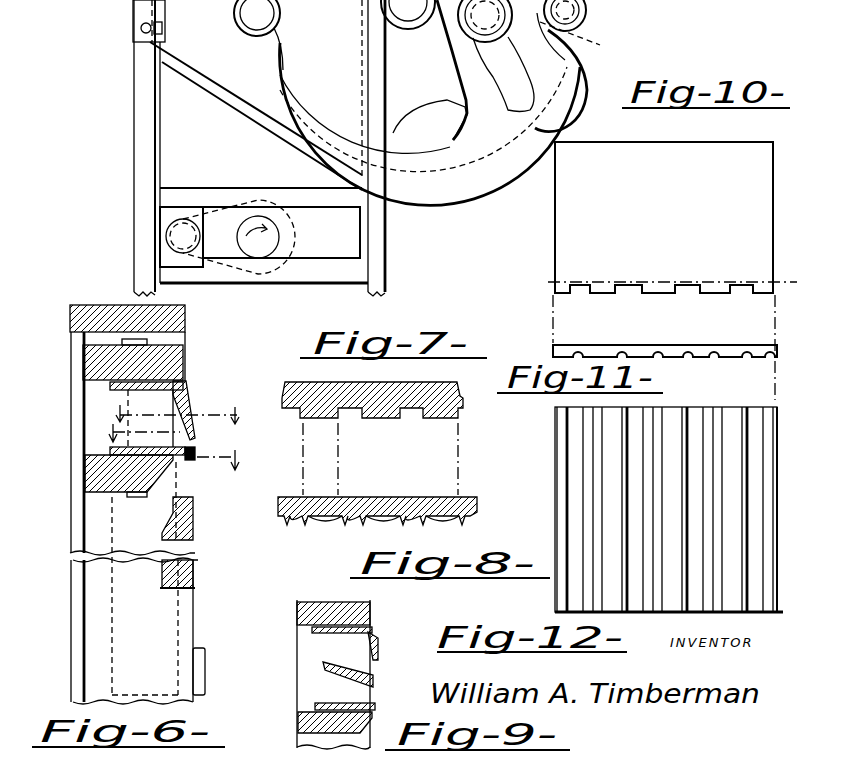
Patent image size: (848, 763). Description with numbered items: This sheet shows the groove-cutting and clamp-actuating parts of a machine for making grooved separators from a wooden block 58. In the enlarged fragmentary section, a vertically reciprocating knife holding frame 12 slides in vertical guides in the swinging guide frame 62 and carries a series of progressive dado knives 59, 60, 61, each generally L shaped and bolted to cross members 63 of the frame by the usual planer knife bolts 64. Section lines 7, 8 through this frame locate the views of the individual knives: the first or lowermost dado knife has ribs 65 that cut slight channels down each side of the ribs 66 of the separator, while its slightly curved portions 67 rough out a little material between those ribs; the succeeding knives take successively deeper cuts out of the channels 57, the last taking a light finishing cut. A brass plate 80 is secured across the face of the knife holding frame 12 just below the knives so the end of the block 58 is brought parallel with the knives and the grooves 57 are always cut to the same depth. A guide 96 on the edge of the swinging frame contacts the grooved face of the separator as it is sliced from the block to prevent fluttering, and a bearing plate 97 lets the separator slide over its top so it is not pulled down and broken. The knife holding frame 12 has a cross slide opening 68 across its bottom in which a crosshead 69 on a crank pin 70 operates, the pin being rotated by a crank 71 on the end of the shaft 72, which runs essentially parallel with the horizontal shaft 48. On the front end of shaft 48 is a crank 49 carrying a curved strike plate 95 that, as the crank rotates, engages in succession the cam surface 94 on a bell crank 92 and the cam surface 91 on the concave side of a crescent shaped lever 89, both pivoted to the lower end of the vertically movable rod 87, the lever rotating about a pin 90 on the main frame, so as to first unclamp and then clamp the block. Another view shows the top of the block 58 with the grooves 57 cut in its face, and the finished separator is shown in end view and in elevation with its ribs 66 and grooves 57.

In FIG. 10, the knife holding frame 12 is at (163, 186).
In FIG. 6, the knife holding frame 12 is at (102, 605).
In FIG. 9, the knife holding frame 12 is at (297, 741).
In FIG. 10, the horizontal shaft 48 is at (388, 3).
In FIG. 10, the crank 49 is at (436, 32).
In FIG. 11, the grooves 57 is at (757, 283).
In FIG. 12, the grooves 57 is at (640, 498).
In FIG. 11, the block 58 is at (672, 271).
In FIG. 6, the dado knife 59 is at (193, 462).
In FIG. 8, the dado knife 59 is at (280, 507).
In FIG. 9, the dado knife 59 is at (298, 702).
In FIG. 9, the dado knife 60 is at (298, 667).
In FIG. 6, the dado knife 61 is at (185, 395).
In FIG. 7, the dado knife 61 is at (283, 387).
In FIG. 9, the dado knife 61 is at (372, 629).
In FIG. 6, the guide frame 62 is at (68, 303).
In FIG. 6, the cross members 63 is at (110, 370).
In FIG. 9, the cross members 63 is at (297, 614).
In FIG. 6, the planer knife bolts 64 is at (80, 378).
In FIG. 8, the ribs 65 is at (405, 521).
In FIG. 11, the ribs 66 is at (650, 292).
In FIG. 12, the ribs 66 is at (650, 452).
In FIG. 8, the slightly curved portions 67 is at (447, 517).
In FIG. 10, the cross slide opening 68 is at (318, 212).
In FIG. 10, the crosshead 69 is at (160, 207).
In FIG. 10, the crank pin 70 is at (173, 238).
In FIG. 10, the crank 71 is at (220, 203).
In FIG. 10, the shaft 72 is at (258, 242).
In FIG. 6, the brass plate 80 is at (194, 570).
In FIG. 10, the vertically movable rod 87 is at (125, 0).
In FIG. 10, the crescent shaped lever 89 is at (210, 67).
In FIG. 10, the pin 90 is at (587, 17).
In FIG. 10, the cam surface 91 is at (352, 100).
In FIG. 10, the bell crank 92 is at (287, 39).
In FIG. 10, the cam surface 94 is at (447, 98).
In FIG. 10, the curved strike plate 95 is at (560, 33).
In FIG. 6, the guide 96 is at (195, 612).
In FIG. 6, the bearing plate 97 is at (194, 675).
In FIG. 6, the section line 7- 7 is at (182, 414).
In FIG. 6, the section line 8- 8 is at (177, 447).